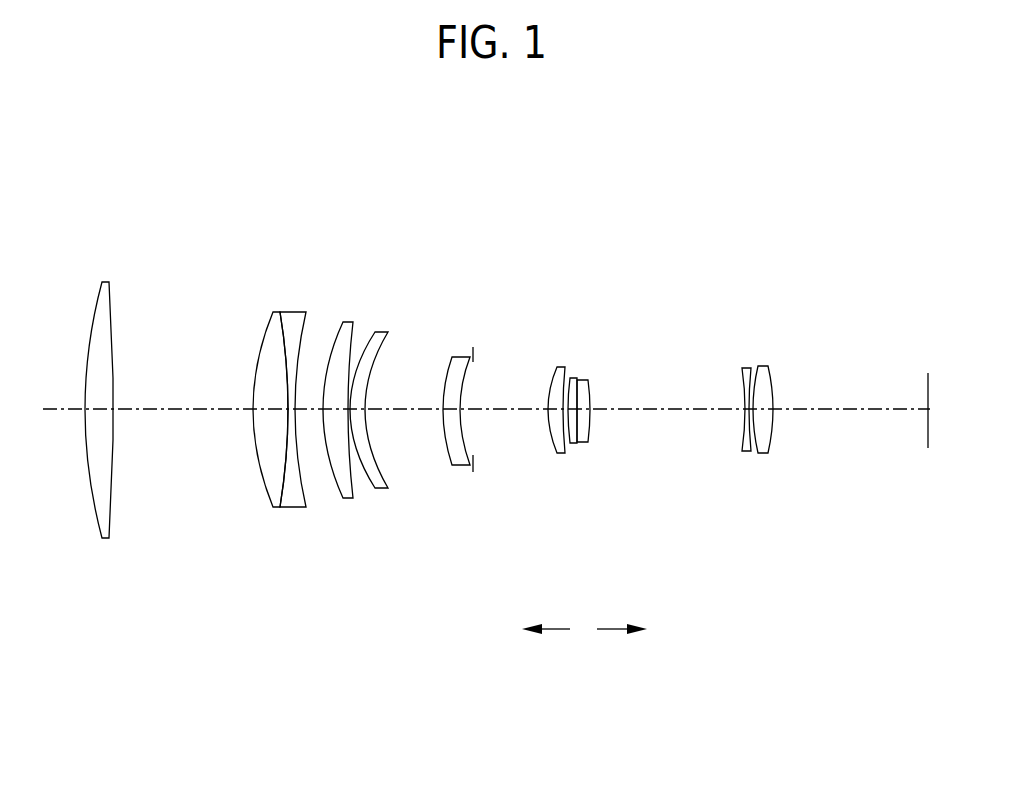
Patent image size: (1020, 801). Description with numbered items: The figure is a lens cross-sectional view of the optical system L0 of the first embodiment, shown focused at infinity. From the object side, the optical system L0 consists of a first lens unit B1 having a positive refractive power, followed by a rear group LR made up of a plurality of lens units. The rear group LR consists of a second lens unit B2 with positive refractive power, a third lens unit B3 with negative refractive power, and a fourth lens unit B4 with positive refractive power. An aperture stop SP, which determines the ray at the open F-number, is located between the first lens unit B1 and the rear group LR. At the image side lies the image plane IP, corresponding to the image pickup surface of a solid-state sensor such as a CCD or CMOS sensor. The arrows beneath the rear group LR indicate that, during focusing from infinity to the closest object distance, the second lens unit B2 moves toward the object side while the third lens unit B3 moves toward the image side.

The optical system L0 is at (789, 245).
The first lens unit B1 is at (73, 537).
The aperture stop SP is at (474, 358).
The rear group LR is at (790, 537).
The second lens unit B2 is at (572, 450).
The third lens unit B3 is at (595, 450).
The fourth lens unit B4 is at (785, 450).
The image plane IP is at (928, 378).